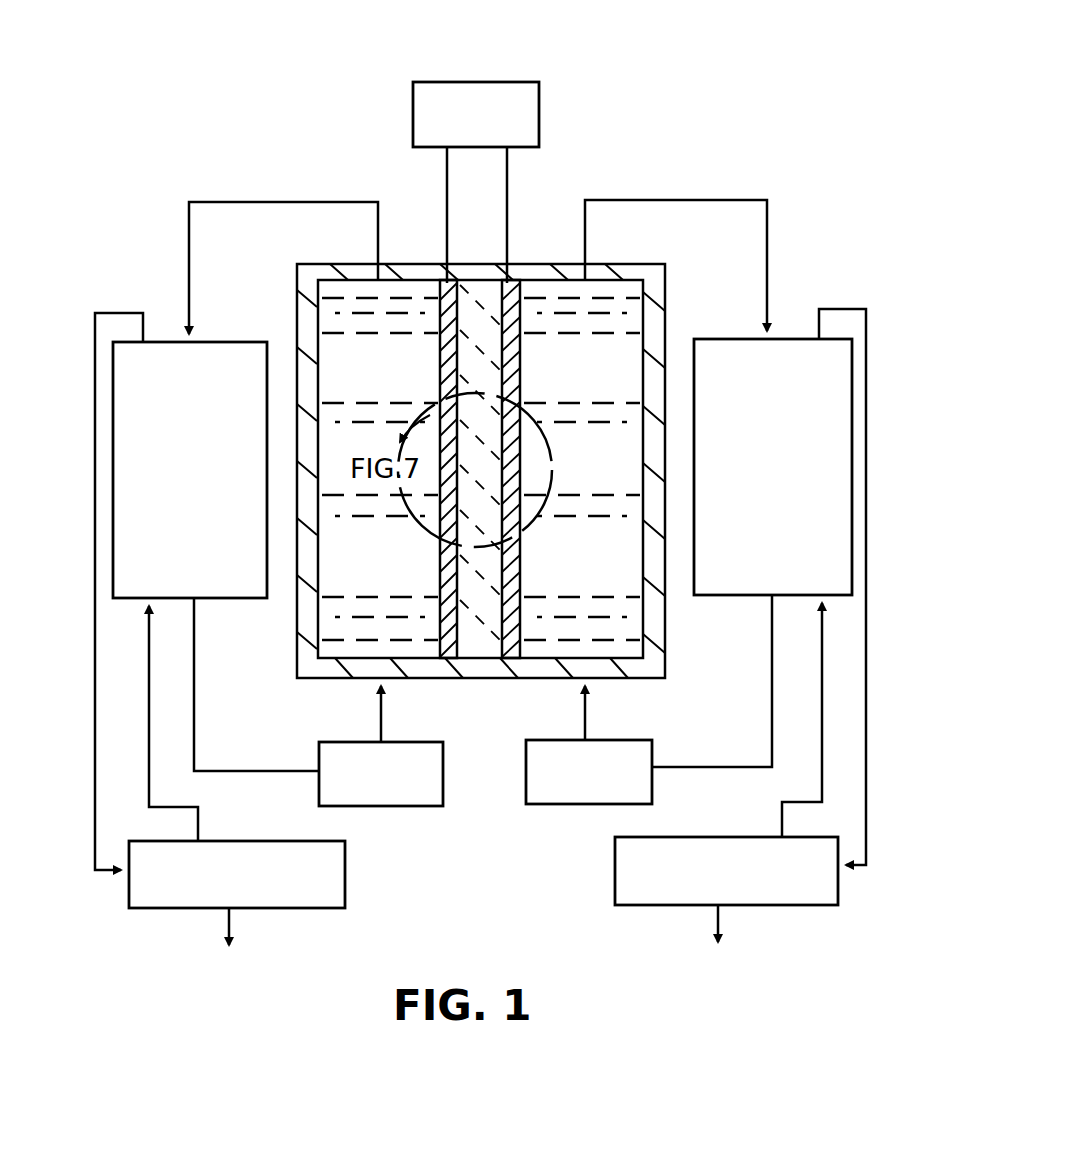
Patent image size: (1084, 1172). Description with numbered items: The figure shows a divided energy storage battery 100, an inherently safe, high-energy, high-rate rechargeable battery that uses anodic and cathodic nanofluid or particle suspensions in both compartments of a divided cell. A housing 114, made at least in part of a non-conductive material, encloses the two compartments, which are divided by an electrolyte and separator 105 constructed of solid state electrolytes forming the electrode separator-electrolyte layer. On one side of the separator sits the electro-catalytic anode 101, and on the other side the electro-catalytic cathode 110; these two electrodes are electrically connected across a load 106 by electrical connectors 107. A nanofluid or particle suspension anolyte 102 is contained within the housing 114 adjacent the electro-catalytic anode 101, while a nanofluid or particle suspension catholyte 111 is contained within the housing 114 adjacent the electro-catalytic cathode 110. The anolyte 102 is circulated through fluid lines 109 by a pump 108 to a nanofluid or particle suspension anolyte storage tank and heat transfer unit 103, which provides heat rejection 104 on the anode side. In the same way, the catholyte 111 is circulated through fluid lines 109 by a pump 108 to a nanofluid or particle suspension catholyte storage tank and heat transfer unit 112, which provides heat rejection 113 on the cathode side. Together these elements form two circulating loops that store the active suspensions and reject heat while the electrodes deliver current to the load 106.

The divided energy storage battery 100 is at (676, 54).
The electro-catalytic anode 101 is at (438, 368).
The nanofluid or particle suspension anolyte 102 is at (402, 572).
The nanofluid or particle suspension anolyte storage tank and heat transfer unit 103 is at (222, 380).
The heat rejection—anode 104 is at (345, 890).
The electrolyte and separator 105 is at (490, 622).
The load 106 is at (490, 81).
The electrical connectors 107 is at (447, 188).
The pump 108 is at (418, 806).
The fluid lines 109 is at (252, 202).
The electro-catalytic cathode 110 is at (522, 392).
The nanofluid or particle suspension catholyte 111 is at (604, 570).
The nanofluid or particle suspension catholyte storage tank and heat transfer unit 112 is at (792, 377).
The heat rejection—cathode 113 is at (615, 868).
The housing 114 is at (665, 312).